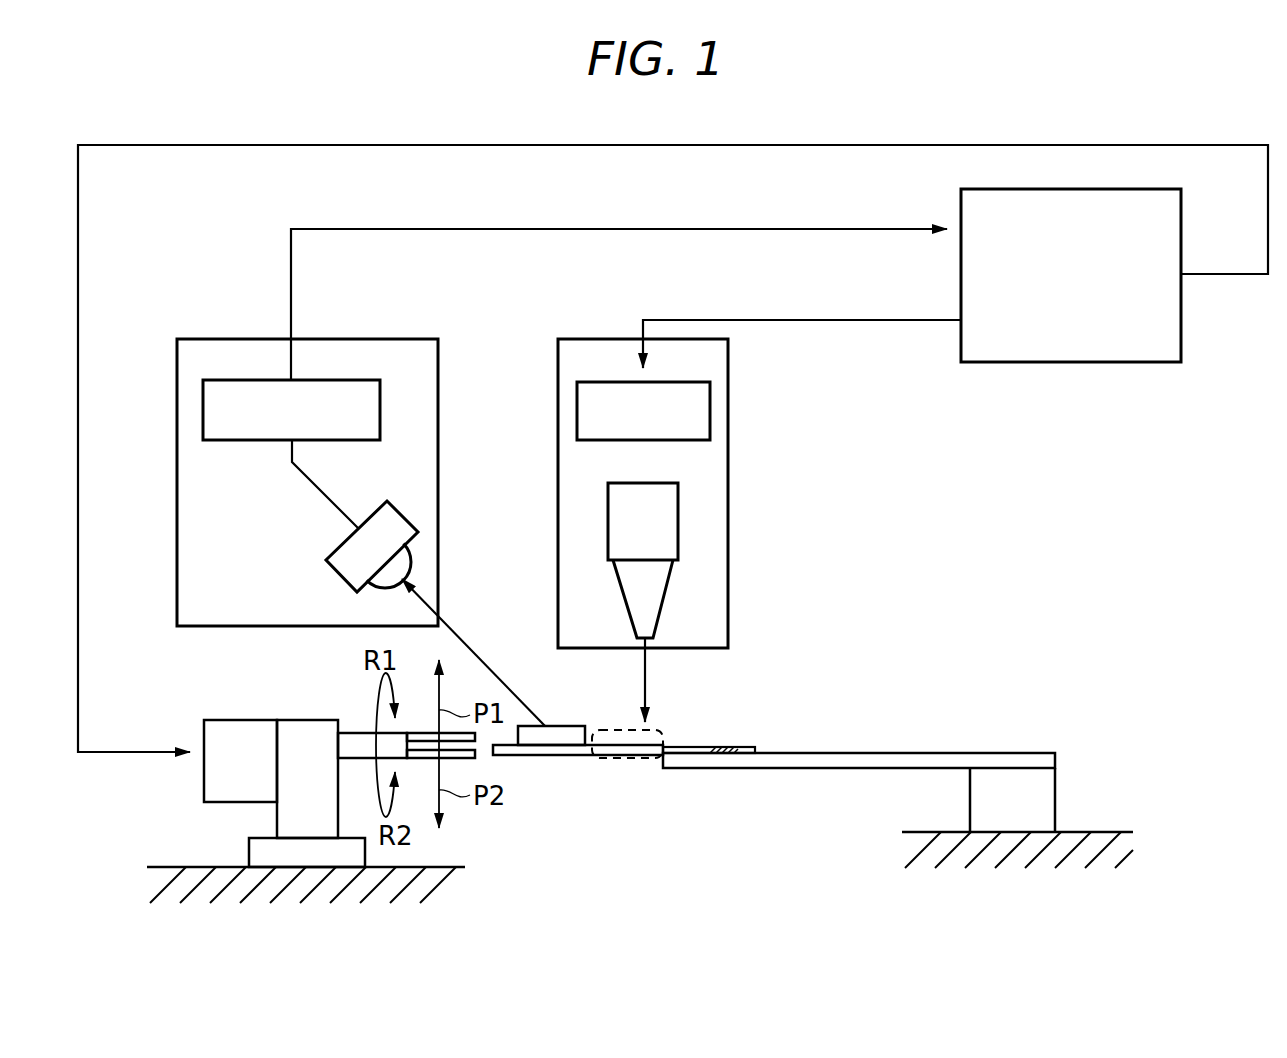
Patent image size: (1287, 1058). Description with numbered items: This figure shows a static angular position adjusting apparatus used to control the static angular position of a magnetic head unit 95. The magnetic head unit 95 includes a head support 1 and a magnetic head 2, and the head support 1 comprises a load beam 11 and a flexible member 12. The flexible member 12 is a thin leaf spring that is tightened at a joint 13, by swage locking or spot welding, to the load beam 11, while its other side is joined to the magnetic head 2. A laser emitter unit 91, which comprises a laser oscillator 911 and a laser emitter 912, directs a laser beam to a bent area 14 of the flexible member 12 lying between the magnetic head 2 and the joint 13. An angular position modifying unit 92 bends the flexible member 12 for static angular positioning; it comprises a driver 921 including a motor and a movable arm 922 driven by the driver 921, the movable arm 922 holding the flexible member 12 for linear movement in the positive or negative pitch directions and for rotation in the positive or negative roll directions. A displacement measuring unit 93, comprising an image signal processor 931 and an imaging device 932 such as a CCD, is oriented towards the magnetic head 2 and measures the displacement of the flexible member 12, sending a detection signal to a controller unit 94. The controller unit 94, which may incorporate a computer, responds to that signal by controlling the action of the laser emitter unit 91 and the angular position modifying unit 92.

The head support 1 is at (808, 729).
The load beam 11 is at (810, 768).
The flexible member 12 is at (548, 755).
The joint 13 is at (723, 747).
The bent area 14 is at (627, 760).
The magnetic head 2 is at (563, 726).
The laser emitter unit 91 is at (728, 610).
The laser oscillator 911 is at (710, 407).
The laser emitter 912 is at (678, 523).
The angular position modifying unit 92 is at (186, 714).
The driver 921 is at (232, 725).
The movable arm 922 is at (353, 735).
The displacement measuring unit 93 is at (176, 405).
The image signal processor 931 is at (216, 440).
The imaging device 932 is at (324, 566).
The controller unit 94 is at (1091, 350).
The magnetic head unit 95 is at (1072, 740).